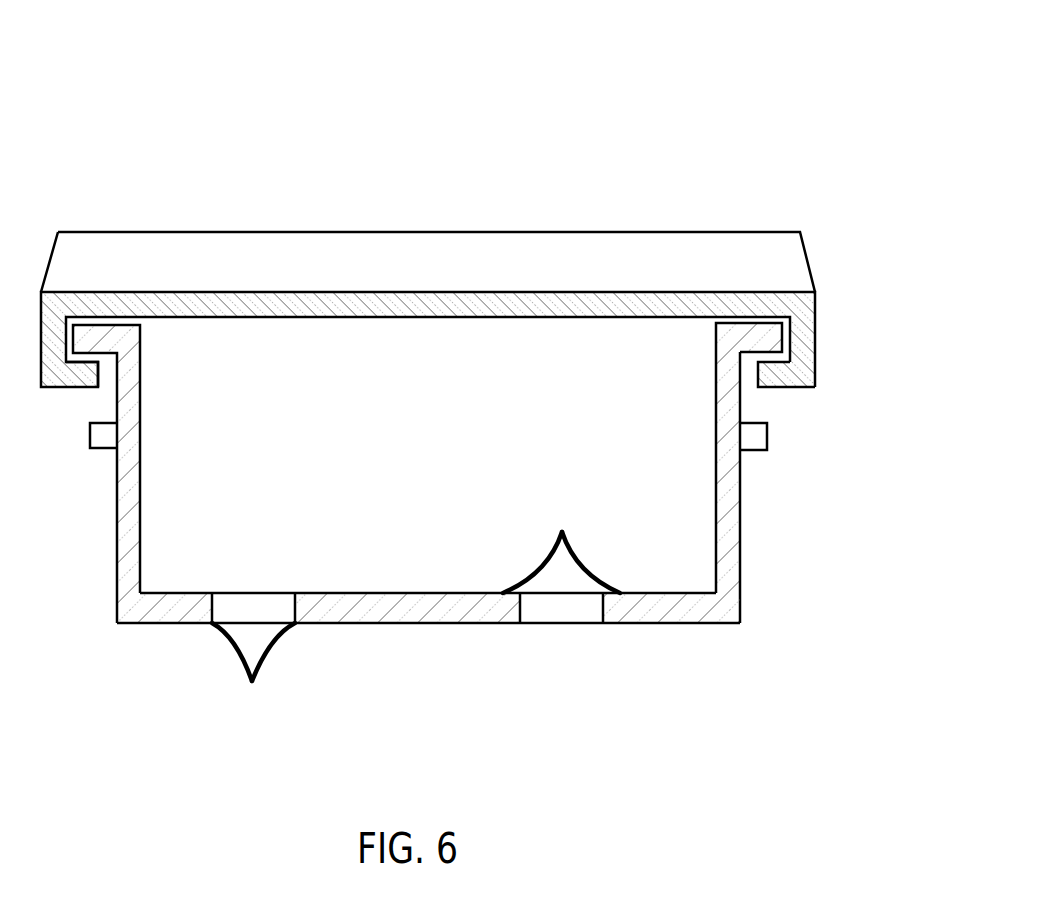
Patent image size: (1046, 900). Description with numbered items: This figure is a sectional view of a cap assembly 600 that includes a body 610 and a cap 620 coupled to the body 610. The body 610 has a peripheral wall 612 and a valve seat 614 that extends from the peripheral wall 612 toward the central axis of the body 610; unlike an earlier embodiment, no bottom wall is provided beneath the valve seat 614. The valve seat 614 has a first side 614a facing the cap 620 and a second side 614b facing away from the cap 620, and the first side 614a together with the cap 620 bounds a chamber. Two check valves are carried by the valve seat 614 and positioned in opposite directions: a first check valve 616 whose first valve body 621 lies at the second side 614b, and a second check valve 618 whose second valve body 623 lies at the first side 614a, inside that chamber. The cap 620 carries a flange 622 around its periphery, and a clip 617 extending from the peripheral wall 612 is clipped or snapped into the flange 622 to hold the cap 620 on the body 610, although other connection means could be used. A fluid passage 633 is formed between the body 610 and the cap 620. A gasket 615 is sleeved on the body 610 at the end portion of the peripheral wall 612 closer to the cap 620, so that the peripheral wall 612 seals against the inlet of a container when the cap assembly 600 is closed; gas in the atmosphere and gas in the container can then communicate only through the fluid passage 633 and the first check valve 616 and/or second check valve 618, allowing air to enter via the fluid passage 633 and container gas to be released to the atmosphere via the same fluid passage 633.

The housing assembly 600 is at (724, 56).
The housing 610 is at (745, 498).
The sidewall 612 is at (723, 578).
The bottom wall 614 is at (672, 613).
The inner surface of bottom wall 614a is at (372, 592).
The outer surface of bottom wall 614b is at (402, 625).
The protrusion 615 is at (102, 450).
The downward membrane 616 is at (276, 648).
The flange 617 is at (758, 338).
The upward membrane 618 is at (584, 567).
The lid 620 is at (697, 246).
The curved portion of membrane 621 is at (235, 650).
The hook of lid 622 is at (785, 378).
The curved portion of membrane 623 is at (538, 570).
The gap 633 is at (110, 364).